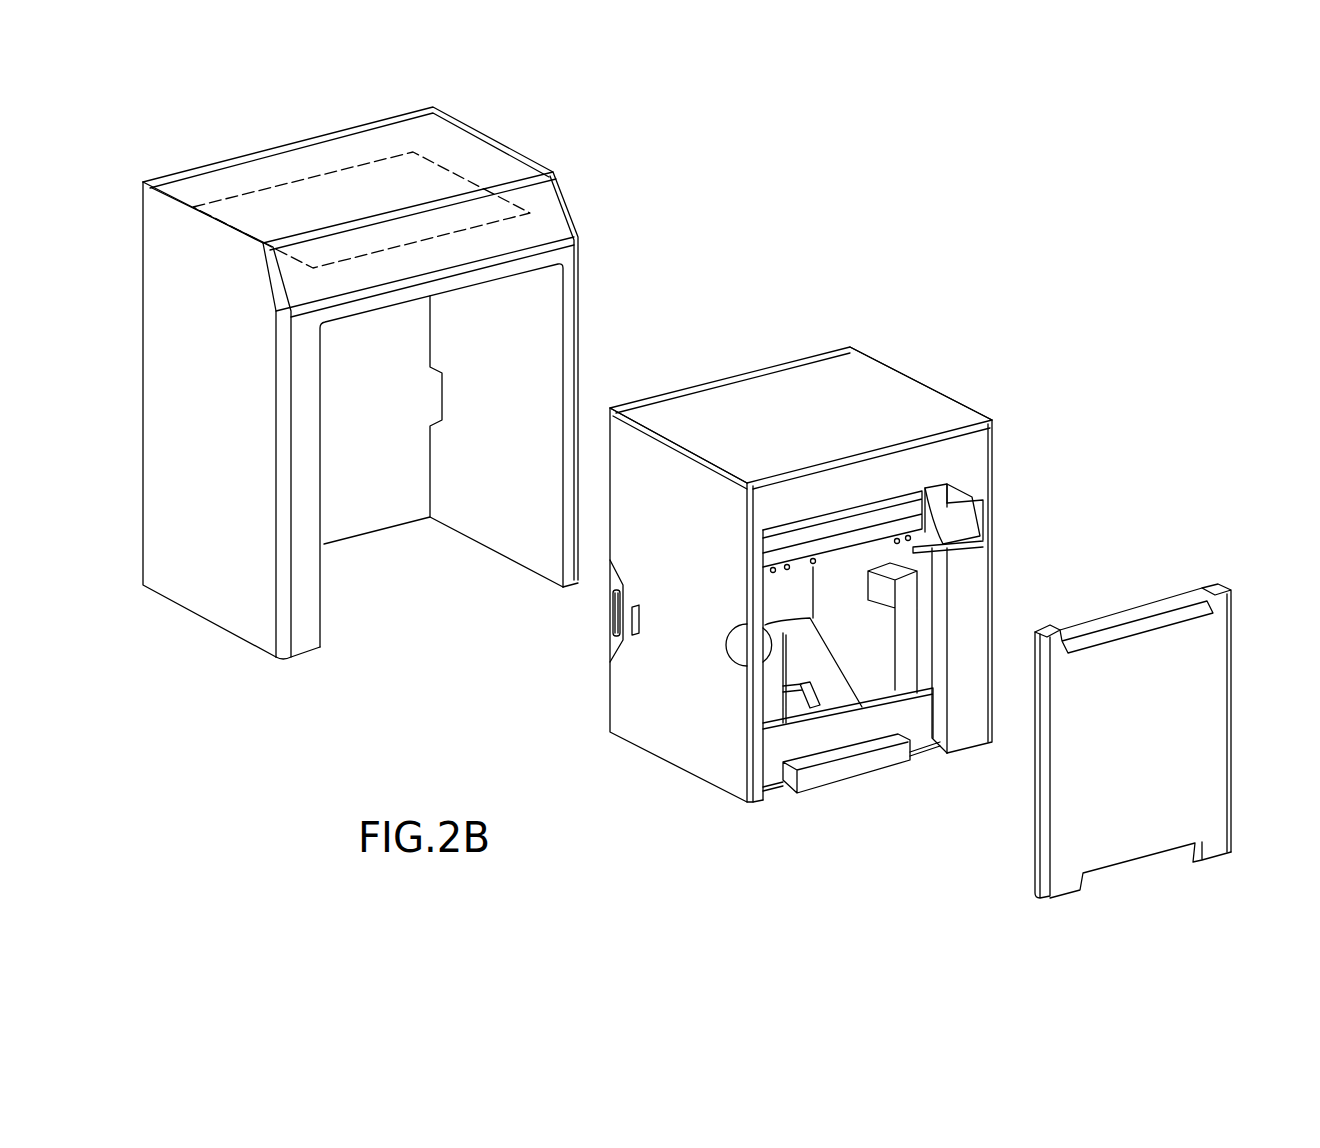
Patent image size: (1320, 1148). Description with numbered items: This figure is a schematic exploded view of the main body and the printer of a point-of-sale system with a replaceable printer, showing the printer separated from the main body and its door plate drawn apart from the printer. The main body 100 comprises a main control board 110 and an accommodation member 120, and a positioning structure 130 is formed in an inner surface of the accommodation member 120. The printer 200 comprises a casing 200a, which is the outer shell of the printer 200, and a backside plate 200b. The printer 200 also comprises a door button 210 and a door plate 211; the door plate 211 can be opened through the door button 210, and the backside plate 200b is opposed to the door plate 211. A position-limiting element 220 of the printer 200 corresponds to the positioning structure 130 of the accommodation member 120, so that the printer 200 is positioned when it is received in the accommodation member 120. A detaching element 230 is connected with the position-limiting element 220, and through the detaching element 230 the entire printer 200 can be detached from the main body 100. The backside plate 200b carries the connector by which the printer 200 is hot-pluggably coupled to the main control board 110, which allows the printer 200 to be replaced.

The main body 100 is at (496, 139).
The main control board 110 is at (282, 183).
The accommodation member 120 is at (543, 353).
The positioning structure 130 is at (442, 396).
The printer 200 is at (881, 359).
The casing 200a is at (940, 390).
The backside plate 200b is at (752, 370).
The door button 210 is at (957, 527).
The door plate 211 is at (1215, 727).
The position-limiting element 220 is at (610, 617).
The detaching element 230 is at (888, 582).